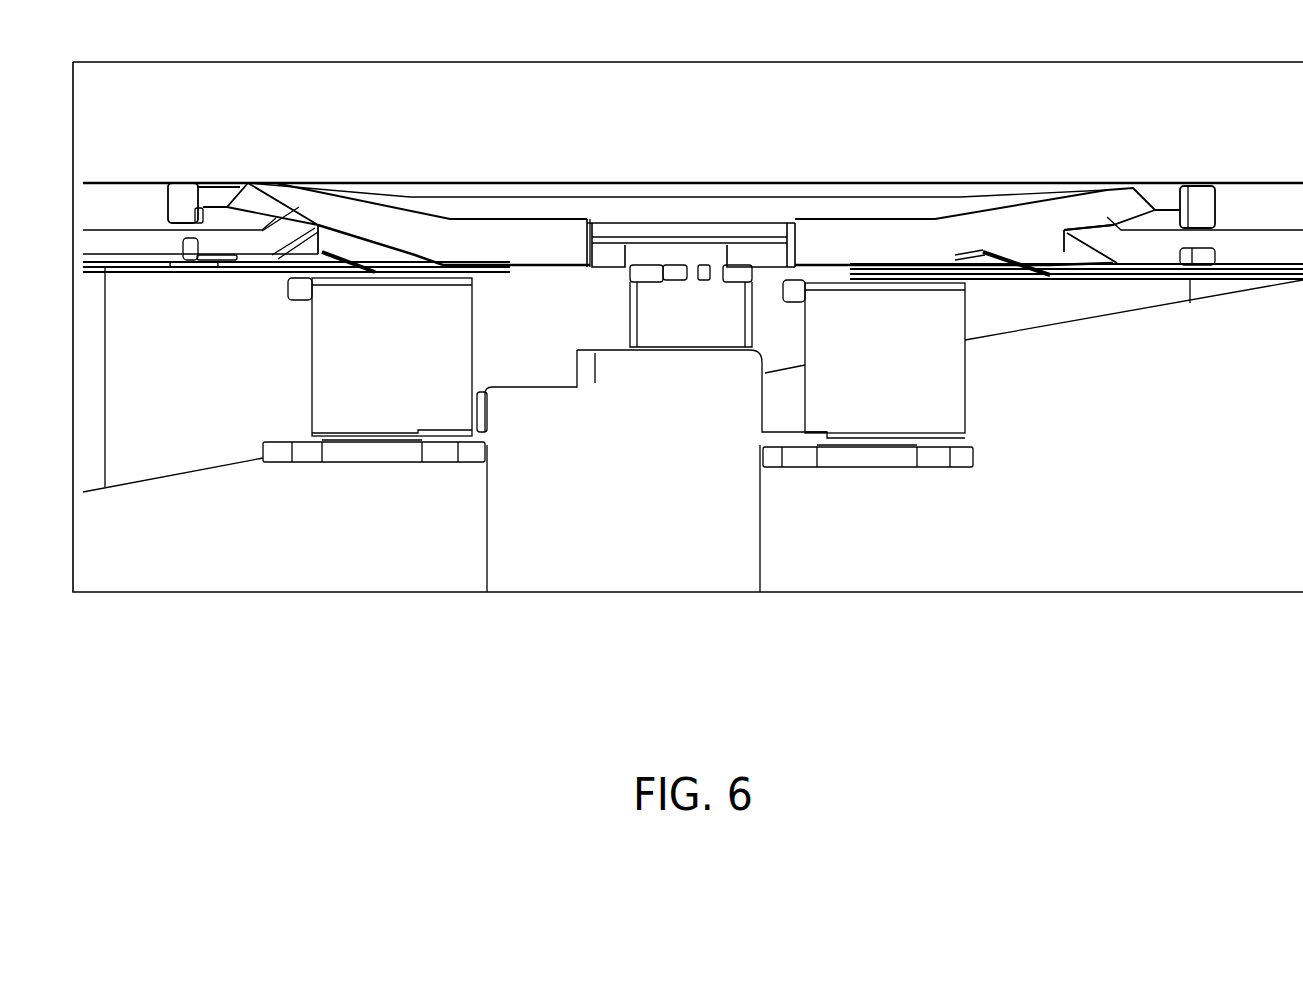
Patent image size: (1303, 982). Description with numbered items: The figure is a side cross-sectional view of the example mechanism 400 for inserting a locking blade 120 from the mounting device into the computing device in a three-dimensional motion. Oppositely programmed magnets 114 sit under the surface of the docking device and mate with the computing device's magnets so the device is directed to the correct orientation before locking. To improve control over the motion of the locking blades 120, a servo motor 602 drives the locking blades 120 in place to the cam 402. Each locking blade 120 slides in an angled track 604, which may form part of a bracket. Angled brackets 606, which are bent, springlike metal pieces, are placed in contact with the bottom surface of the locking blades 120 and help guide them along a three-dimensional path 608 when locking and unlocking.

The mechanism 400 is at (688, 411).
The oppositely programmed magnets 114 is at (180, 182).
The locking blade 120 is at (388, 213).
The cam 402 is at (705, 240).
The servo motor 602 is at (656, 517).
The angled tracks 604 is at (227, 192).
The angled brackets 606 is at (372, 276).
The 3D path 608 is at (217, 198).